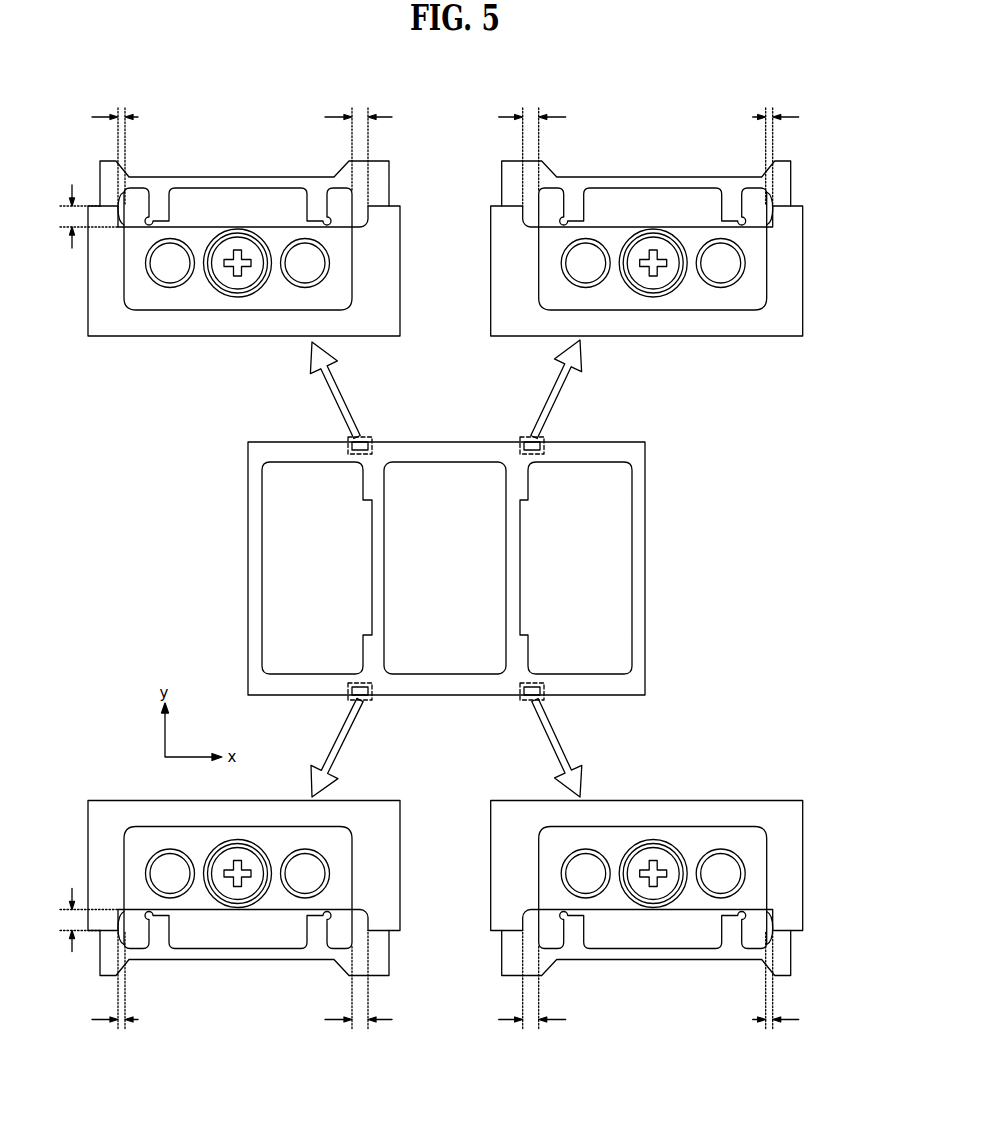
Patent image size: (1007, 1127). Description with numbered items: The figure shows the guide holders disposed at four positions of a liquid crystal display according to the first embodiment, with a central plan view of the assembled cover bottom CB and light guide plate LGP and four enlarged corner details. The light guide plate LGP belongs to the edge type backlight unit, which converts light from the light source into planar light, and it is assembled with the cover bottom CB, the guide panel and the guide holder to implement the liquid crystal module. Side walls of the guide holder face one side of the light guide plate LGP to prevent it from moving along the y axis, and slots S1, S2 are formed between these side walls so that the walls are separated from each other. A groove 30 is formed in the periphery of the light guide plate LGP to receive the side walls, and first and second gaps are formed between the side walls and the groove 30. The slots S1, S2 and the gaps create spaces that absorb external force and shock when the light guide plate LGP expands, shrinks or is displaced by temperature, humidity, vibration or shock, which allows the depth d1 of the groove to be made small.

The groove 30 is at (124, 192).
The slot S1 is at (157, 200).
The slot S2 is at (315, 200).
The cover bottom CB is at (380, 189).
The light guide plate LGP is at (395, 263).
The depth of the groove d1 is at (82, 568).